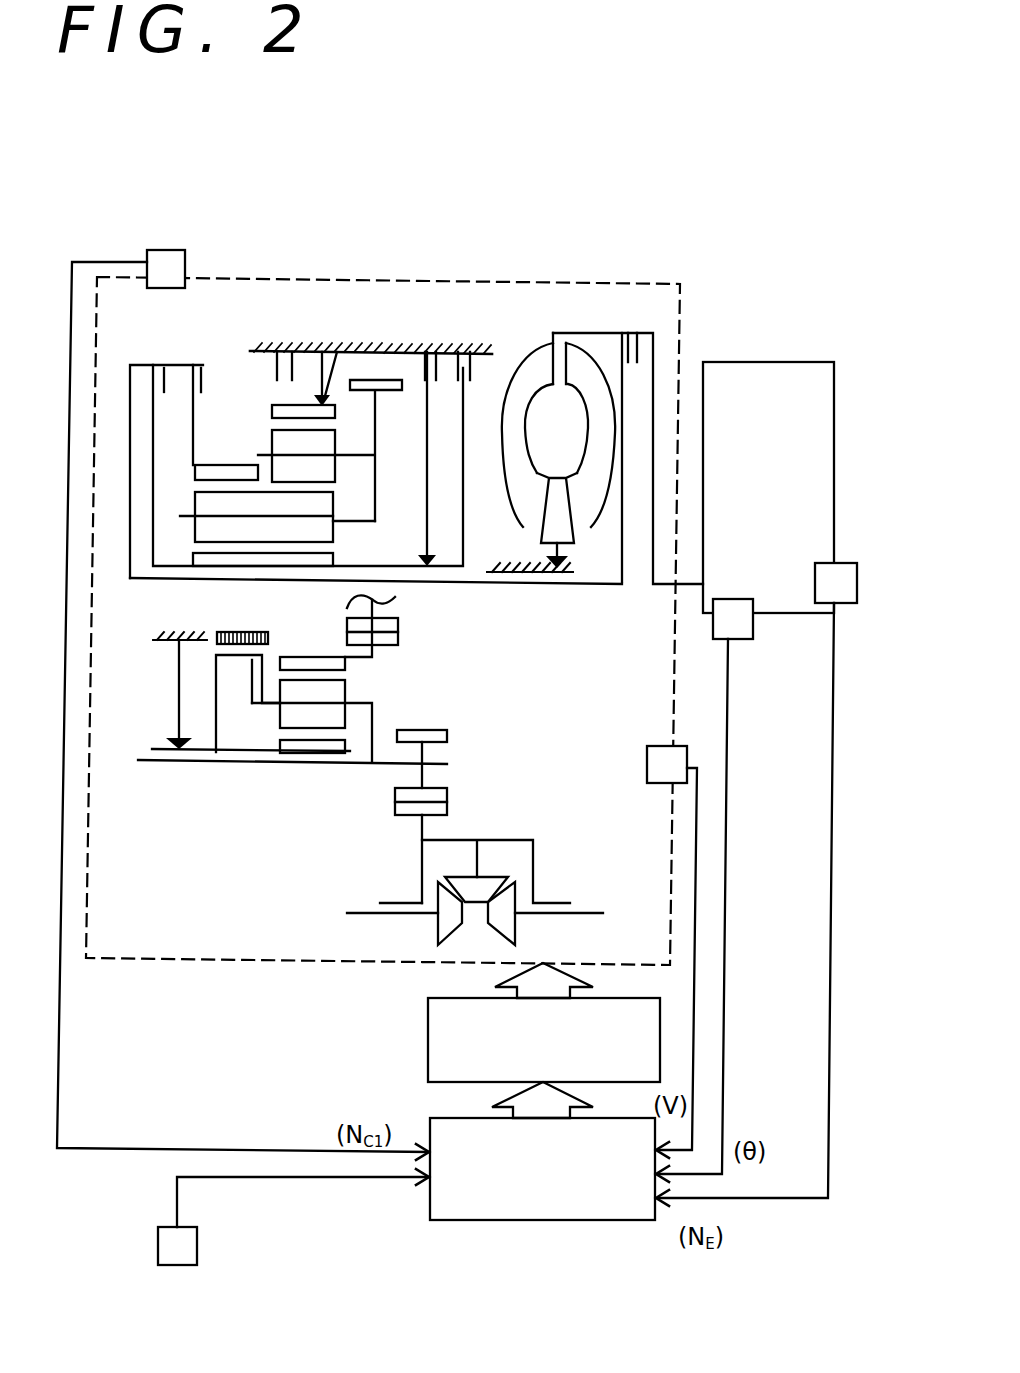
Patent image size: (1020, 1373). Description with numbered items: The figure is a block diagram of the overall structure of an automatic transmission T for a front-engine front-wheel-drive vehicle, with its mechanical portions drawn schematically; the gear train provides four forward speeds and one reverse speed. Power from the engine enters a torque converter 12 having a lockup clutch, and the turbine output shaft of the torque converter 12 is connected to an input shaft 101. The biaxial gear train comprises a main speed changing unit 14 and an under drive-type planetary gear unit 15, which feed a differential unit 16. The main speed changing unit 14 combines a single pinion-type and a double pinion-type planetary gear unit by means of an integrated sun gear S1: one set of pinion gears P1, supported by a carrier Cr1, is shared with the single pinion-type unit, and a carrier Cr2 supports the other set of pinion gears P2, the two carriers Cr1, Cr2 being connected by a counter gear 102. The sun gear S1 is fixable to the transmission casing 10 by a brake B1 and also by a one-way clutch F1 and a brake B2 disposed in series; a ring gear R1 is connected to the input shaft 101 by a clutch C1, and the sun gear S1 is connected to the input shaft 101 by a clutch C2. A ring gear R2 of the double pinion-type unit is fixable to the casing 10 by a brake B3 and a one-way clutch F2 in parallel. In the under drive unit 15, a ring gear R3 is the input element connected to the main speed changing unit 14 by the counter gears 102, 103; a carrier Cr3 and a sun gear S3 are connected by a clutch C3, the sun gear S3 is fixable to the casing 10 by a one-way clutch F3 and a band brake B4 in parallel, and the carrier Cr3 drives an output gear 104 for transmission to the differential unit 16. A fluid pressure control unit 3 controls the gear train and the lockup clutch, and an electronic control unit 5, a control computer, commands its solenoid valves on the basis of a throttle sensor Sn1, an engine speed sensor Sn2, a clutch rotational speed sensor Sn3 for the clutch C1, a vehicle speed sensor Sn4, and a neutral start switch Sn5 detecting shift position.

The automatic transmission T is at (436, 266).
The torque converter 12 is at (595, 441).
The main speed changing unit 14 is at (277, 296).
The transmission casing 10 is at (311, 452).
The under drive-type planetary gear unit 15 is at (307, 721).
The differential unit 16 is at (540, 842).
The input shaft 101 is at (449, 582).
The counter gear 102 is at (402, 622).
The counter gear 103 is at (402, 646).
The output gear 104 is at (450, 737).
The fluid pressure control unit 3 is at (428, 1018).
The electronic control unit 5 is at (588, 1222).
The throttle sensor Sn1 is at (733, 641).
The engine speed sensor Sn2 is at (843, 563).
The clutch C1 rotational speed sensor Sn3 is at (168, 250).
The vehicle speed sensor Sn4 is at (649, 746).
The neutral start switch Sn5 is at (197, 1247).
The clutch C1 is at (204, 349).
The clutch C2 is at (165, 348).
The clutch C3 is at (244, 660).
The brake B1 is at (474, 350).
The brake B2 is at (423, 350).
The brake B3 is at (266, 350).
The band brake B4 is at (262, 631).
The one-way clutch F1 is at (419, 561).
The one-way clutch F2 is at (338, 350).
The one-way clutch F3 is at (167, 742).
The ring gear R1 is at (226, 466).
The ring gear R2 is at (272, 409).
The ring gear R3 is at (305, 656).
The pinion gears P1 is at (337, 511).
The pinion gears P2 is at (337, 443).
The carrier Cr1 is at (360, 522).
The carrier Cr2 is at (361, 455).
The carrier Cr3 is at (365, 703).
The sun gear S1 is at (207, 556).
The sun gear S3 is at (316, 752).